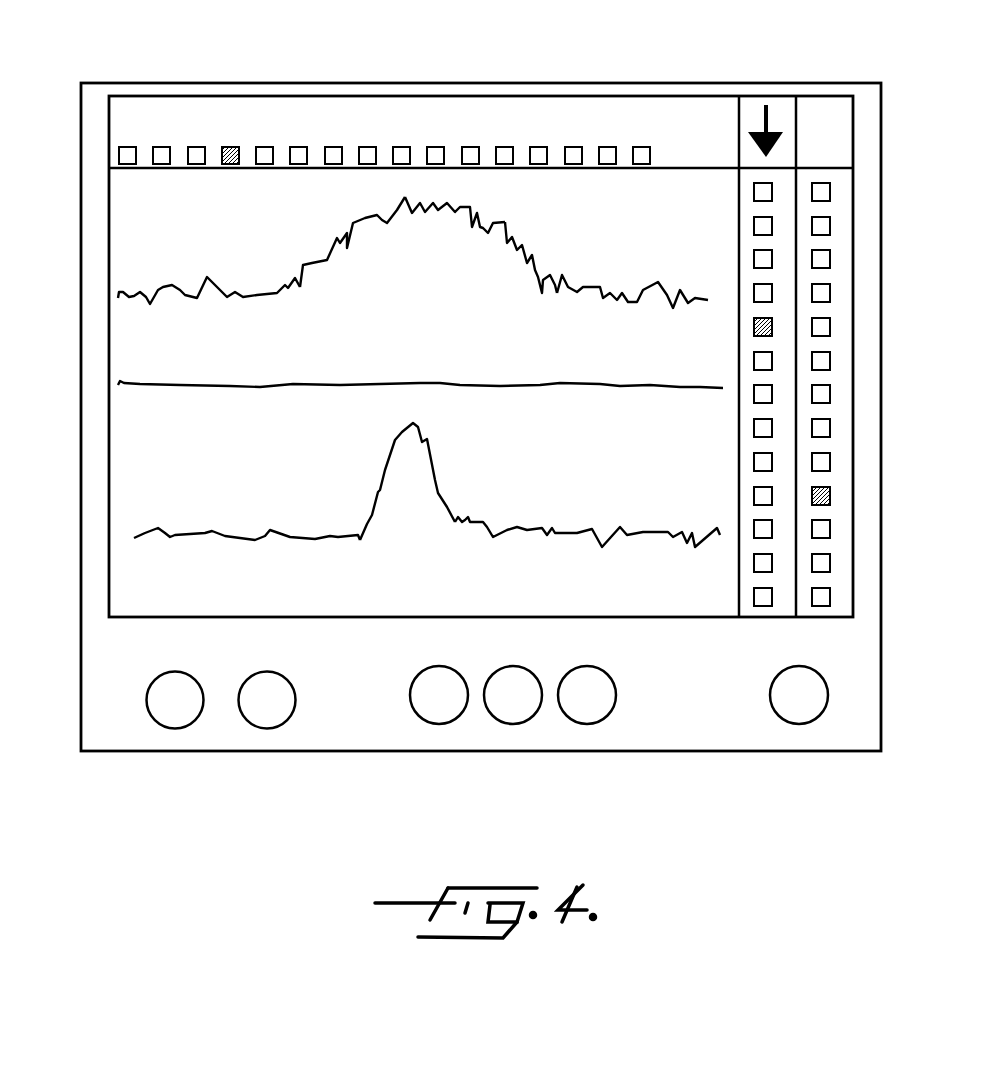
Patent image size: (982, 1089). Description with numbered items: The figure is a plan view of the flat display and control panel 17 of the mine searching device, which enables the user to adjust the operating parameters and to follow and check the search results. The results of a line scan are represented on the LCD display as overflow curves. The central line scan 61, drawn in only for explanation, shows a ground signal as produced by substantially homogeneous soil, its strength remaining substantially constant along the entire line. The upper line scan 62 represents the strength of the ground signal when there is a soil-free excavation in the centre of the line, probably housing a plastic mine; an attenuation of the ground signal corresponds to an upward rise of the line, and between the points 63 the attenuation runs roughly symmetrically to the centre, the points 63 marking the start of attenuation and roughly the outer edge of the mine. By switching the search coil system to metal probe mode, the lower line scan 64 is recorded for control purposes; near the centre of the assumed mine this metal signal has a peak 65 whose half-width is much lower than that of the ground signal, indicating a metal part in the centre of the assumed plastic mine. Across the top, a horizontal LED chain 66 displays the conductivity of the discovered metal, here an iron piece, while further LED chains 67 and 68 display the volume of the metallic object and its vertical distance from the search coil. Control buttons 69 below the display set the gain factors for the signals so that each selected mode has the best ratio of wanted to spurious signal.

The display and control panel 17 is at (114, 818).
The central line scan 61 is at (167, 383).
The upper line scan 62 is at (172, 285).
The points 63 is at (271, 276).
The lower line scan 64 is at (170, 535).
The peak 65 is at (417, 425).
The LED chain 66 is at (70, 154).
The LED chain 67 is at (825, 70).
The LED chain 68 is at (766, 71).
The control buttons 69 is at (235, 766).